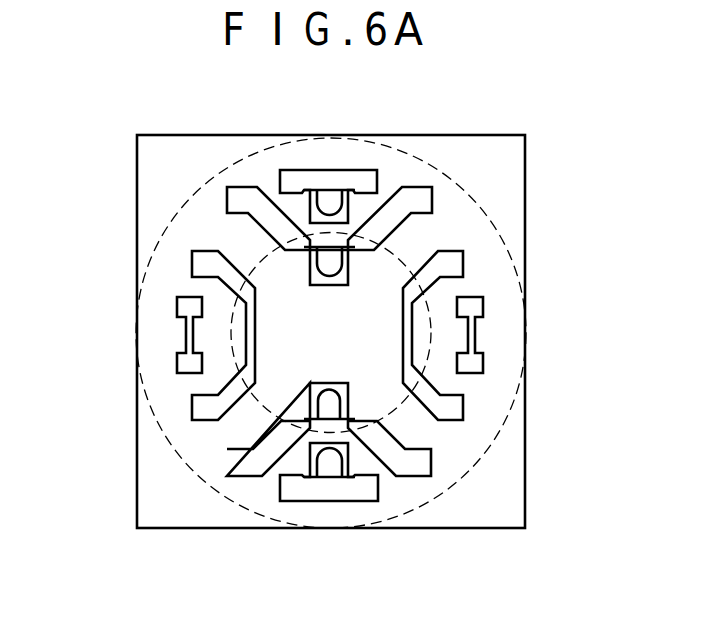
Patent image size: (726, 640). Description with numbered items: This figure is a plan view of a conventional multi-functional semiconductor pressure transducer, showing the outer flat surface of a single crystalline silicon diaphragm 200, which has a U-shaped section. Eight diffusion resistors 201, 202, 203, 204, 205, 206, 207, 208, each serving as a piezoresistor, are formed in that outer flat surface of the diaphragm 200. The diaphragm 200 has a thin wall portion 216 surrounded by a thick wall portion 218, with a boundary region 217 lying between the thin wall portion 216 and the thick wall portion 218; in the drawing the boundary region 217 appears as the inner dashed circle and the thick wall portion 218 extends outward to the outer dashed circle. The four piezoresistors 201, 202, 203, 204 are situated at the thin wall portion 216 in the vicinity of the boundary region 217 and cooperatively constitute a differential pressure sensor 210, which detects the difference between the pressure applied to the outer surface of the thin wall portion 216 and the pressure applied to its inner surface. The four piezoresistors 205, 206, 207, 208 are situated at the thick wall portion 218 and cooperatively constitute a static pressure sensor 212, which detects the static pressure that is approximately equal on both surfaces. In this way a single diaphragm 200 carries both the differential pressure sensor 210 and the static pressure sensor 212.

The single crystalline silicon diaphragm 200 is at (525, 192).
The diffusion resistor 201 is at (403, 347).
The diffusion resistor 202 is at (255, 317).
The diffusion resistor 203 is at (342, 286).
The diffusion resistor 204 is at (327, 385).
The diffusion resistor 205 is at (470, 328).
The diffusion resistor 206 is at (188, 326).
The diffusion resistor 207 is at (342, 198).
The diffusion resistor 208 is at (346, 477).
The differential pressure sensor 210 is at (182, 422).
The static pressure sensor 212 is at (157, 367).
The thin wall portion 216 is at (385, 402).
The boundary region 217 is at (259, 402).
The thick wall portion 218 is at (453, 465).